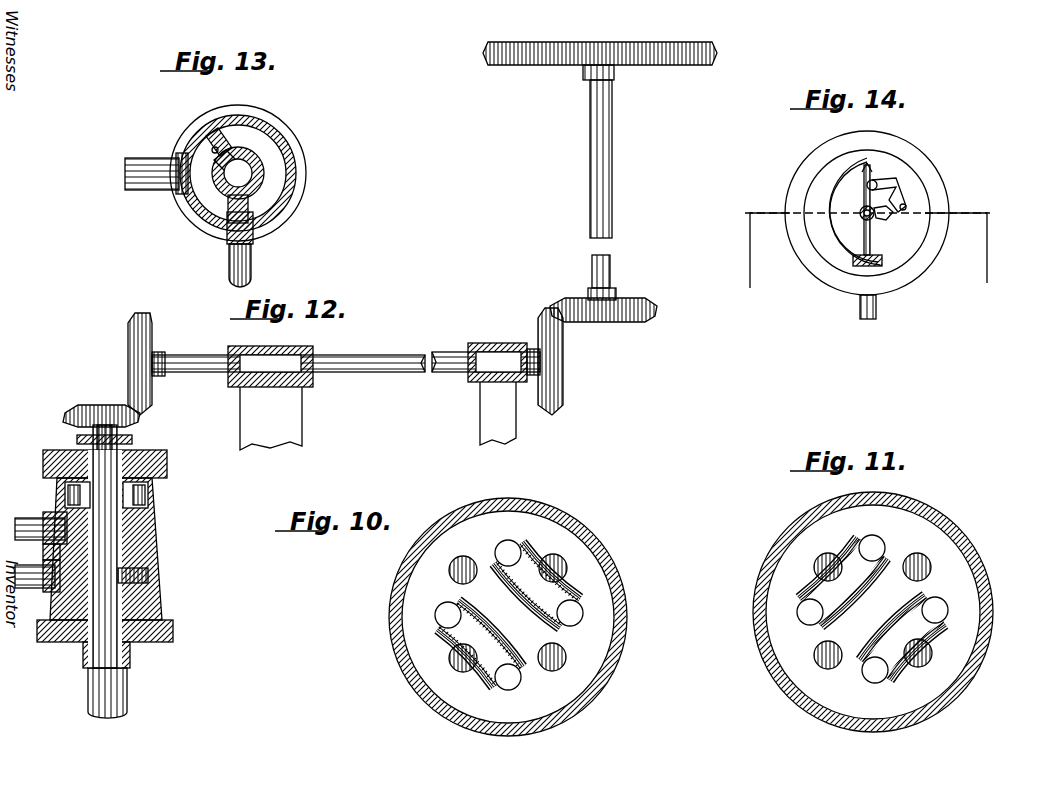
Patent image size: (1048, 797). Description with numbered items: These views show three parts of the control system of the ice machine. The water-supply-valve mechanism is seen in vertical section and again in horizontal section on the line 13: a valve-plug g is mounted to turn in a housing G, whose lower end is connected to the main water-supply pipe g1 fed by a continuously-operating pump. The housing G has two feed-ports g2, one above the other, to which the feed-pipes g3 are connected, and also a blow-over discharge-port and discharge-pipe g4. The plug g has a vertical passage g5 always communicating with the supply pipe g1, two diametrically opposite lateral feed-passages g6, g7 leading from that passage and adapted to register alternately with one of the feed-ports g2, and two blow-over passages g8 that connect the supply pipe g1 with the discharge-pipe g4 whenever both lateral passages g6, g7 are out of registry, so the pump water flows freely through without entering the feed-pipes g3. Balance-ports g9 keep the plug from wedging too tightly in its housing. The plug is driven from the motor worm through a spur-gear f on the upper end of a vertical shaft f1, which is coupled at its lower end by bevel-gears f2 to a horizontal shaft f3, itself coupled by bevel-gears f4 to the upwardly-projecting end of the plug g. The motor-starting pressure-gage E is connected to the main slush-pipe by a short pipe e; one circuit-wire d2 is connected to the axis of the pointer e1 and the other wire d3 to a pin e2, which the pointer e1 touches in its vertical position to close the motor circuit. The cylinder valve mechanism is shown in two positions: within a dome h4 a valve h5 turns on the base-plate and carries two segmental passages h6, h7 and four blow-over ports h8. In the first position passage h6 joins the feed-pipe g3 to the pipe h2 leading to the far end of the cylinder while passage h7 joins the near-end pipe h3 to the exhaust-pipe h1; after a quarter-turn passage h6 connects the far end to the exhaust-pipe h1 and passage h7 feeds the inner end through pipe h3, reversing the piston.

In FIG. 12, the spur-gear f is at (552, 42).
In FIG. 12, the vertical shaft f1 is at (612, 170).
In FIG. 12, the bevel-gears f2 is at (613, 325).
In FIG. 12, the horizontal shaft f3 is at (375, 372).
In FIG. 12, the bevel-gears f4 is at (128, 358).
In FIG. 13, the housing G is at (298, 156).
In FIG. 12, the housing G is at (160, 556).
In FIG. 13, the valve-plug g is at (292, 194).
In FIG. 12, the valve-plug g is at (96, 530).
In FIG. 12, the main water-supply pipe g1 is at (128, 688).
In FIG. 12, the feed-ports g2 is at (52, 562).
In FIG. 13, the feed-pipes g3 is at (160, 188).
In FIG. 12, the feed-pipes g3 is at (33, 532).
In FIG. 10, the feed-pipes g3 is at (508, 677).
In FIG. 11, the feed-pipes g3 is at (875, 670).
In FIG. 13, the discharge-pipe g4 is at (253, 257).
In FIG. 13, the vertical passage g5 is at (218, 158).
In FIG. 12, the vertical passage g5 is at (110, 605).
In FIG. 13, the lateral feed-passage g6 is at (183, 203).
In FIG. 12, the lateral feed-passage g6 is at (150, 493).
In FIG. 13, the lateral feed-passage g7 is at (272, 177).
In FIG. 12, the lateral feed-passage g7 is at (143, 580).
In FIG. 13, the blow-over passages g8 is at (215, 148).
In FIG. 12, the blow-over passages g8 is at (140, 492).
In FIG. 12, the balance-ports g9 is at (145, 458).
In FIG. 12, the section line 13 is at (221, 493).
In FIG. 14, the pressure-gage E is at (945, 187).
In FIG. 14, the short pipe e is at (878, 311).
In FIG. 14, the pointer e1 is at (865, 225).
In FIG. 14, the pin e2 is at (876, 183).
In FIG. 14, the circuit-wire d2 is at (754, 250).
In FIG. 14, the circuit-wire d3 is at (956, 248).
In FIG. 10, the exhaust-pipe h1 is at (508, 553).
In FIG. 11, the exhaust-pipe h1 is at (872, 548).
In FIG. 10, the pipe to outer end of cylinder h2 is at (448, 615).
In FIG. 11, the pipe to outer end of cylinder h2 is at (810, 612).
In FIG. 10, the pipe to inner end of cylinder h3 is at (570, 613).
In FIG. 11, the pipe to inner end of cylinder h3 is at (935, 610).
In FIG. 10, the dome h4 is at (395, 571).
In FIG. 11, the dome h4 is at (768, 540).
In FIG. 10, the valve h5 is at (486, 610).
In FIG. 11, the valve h5 is at (894, 675).
In FIG. 10, the segmental passage h6 is at (450, 634).
In FIG. 11, the segmental passage h6 is at (848, 560).
In FIG. 10, the segmental passage h7 is at (535, 588).
In FIG. 11, the segmental passage h7 is at (918, 636).
In FIG. 10, the blow-over ports h8 is at (450, 573).
In FIG. 11, the blow-over ports h8 is at (814, 568).